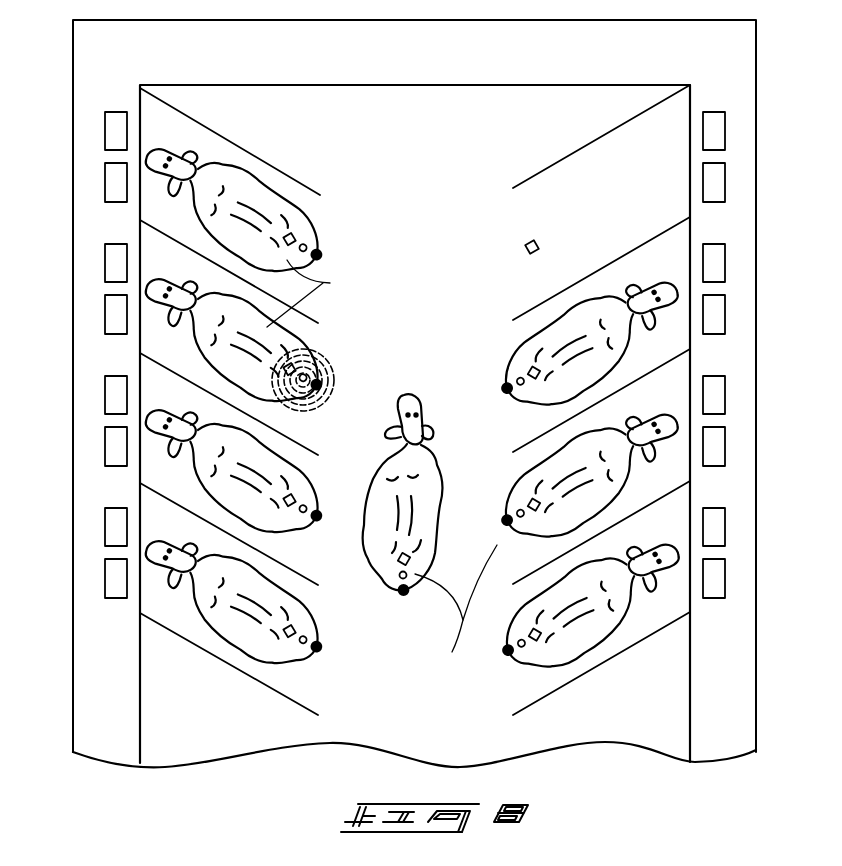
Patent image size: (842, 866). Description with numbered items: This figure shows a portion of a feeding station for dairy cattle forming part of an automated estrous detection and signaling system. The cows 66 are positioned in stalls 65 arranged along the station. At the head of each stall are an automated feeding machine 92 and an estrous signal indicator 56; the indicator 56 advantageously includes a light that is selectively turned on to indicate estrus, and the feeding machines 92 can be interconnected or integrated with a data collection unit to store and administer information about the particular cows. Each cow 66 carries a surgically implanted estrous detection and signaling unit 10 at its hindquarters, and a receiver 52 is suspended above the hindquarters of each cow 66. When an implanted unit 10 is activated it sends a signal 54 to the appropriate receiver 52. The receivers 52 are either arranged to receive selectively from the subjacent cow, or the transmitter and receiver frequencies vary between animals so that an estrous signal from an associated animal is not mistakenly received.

The estrous detection and signaling unit 10 is at (310, 247).
The receiver 52 is at (302, 237).
The signal 54 is at (335, 345).
The estrous signal indicator 56 is at (116, 185).
The stall 65 is at (576, 222).
The cow 66 is at (330, 283).
The automated feeding machine 92 is at (116, 133).